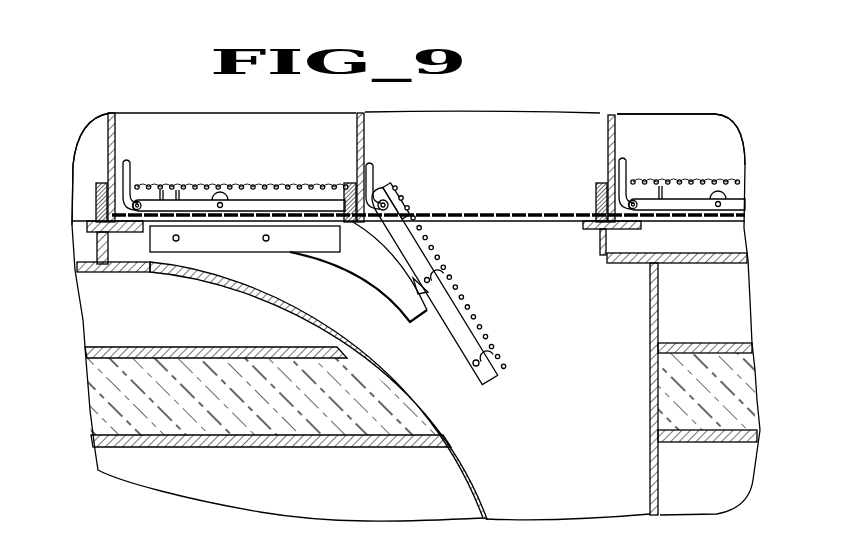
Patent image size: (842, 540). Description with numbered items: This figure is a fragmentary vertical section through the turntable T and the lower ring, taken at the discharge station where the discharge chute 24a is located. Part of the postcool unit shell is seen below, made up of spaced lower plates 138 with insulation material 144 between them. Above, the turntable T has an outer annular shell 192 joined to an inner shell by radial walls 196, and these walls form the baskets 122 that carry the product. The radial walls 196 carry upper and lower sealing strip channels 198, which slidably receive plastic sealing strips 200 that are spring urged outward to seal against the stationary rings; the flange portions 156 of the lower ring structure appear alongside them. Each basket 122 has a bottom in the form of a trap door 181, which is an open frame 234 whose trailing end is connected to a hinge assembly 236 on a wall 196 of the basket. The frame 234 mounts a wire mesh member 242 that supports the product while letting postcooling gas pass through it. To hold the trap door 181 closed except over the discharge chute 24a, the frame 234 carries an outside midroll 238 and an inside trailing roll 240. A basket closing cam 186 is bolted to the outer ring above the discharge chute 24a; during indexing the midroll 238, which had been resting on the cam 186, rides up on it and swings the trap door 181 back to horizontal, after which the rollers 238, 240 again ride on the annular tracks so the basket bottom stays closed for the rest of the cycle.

The basket 122 is at (102, 112).
The turntable T is at (531, 112).
The outer annular shell 192 is at (82, 157).
The radial wall 196 is at (110, 132).
The sealing strip channel 198 is at (96, 197).
The hinge assembly 236 is at (127, 160).
The open frame 234 is at (177, 200).
The wire mesh member 242 is at (143, 181).
The trap door 181 is at (272, 187).
The inside trailing roll 240 is at (345, 225).
The sealing strip 200 is at (95, 215).
The flange 156 is at (88, 228).
The outside midroll 238 is at (219, 219).
The basket closing cam 186 is at (355, 286).
The lower plate 138 is at (168, 347).
The insulation material 144 is at (197, 378).
The discharge chute 24a is at (580, 434).